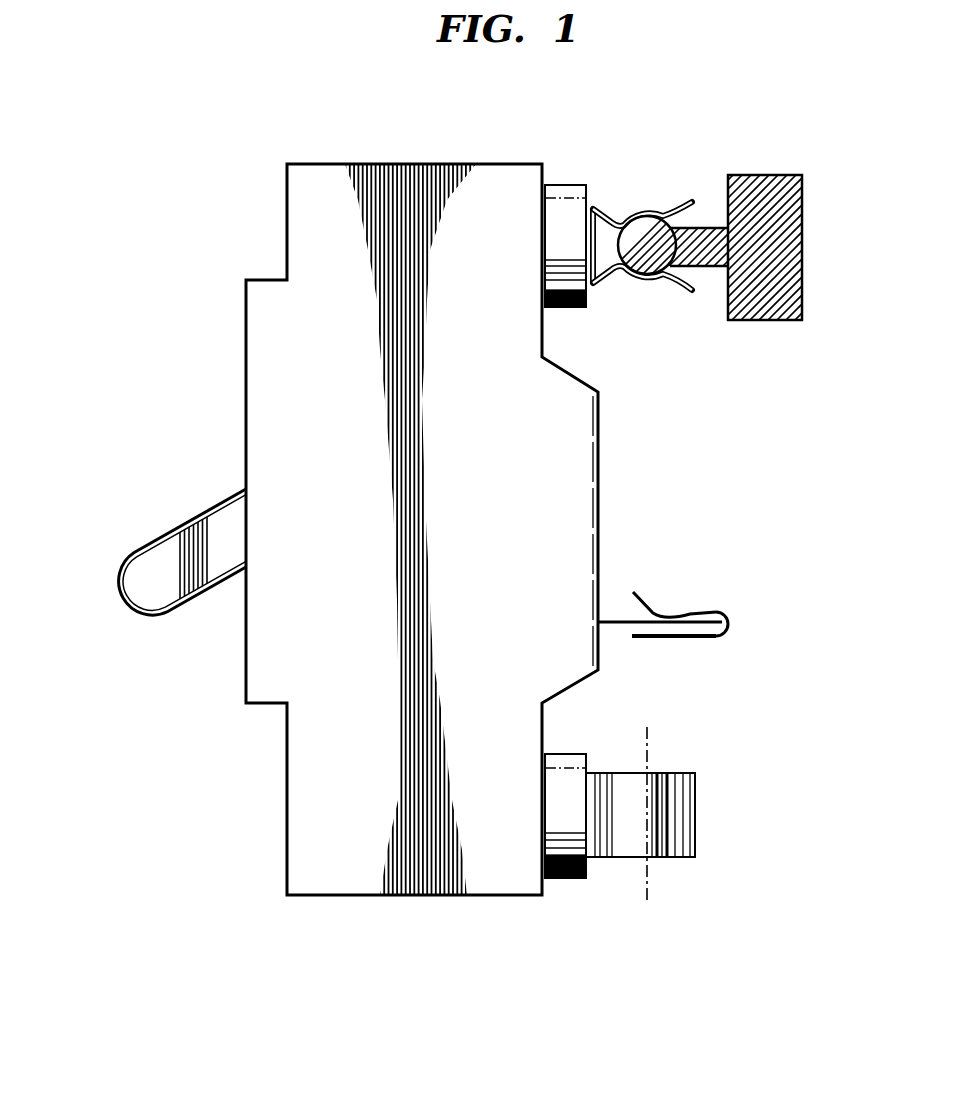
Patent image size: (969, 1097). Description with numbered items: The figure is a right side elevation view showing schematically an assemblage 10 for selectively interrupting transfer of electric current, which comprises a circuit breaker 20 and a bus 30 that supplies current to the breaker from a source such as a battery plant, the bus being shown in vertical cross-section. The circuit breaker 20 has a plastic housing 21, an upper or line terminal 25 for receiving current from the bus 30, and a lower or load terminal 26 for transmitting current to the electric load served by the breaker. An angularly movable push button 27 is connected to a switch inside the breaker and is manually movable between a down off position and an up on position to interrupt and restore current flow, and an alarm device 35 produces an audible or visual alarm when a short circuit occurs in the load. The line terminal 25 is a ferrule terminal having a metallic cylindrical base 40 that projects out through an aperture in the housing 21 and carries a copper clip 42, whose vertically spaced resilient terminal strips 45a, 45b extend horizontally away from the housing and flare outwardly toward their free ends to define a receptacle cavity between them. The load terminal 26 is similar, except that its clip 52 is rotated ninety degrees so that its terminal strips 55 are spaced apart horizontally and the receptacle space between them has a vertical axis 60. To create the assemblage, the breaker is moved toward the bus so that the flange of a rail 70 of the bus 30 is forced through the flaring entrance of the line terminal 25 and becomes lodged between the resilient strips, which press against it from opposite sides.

The assemblage 10 is at (521, 84).
The circuit breaker 20 is at (202, 400).
The plastic housing 21 is at (600, 463).
The upper or line terminal 25 is at (644, 257).
The lower or load terminal 26 is at (579, 915).
The push button 27 is at (112, 596).
The bus 30 is at (757, 260).
The alarm device 35 is at (616, 620).
The cylindrical base 40 is at (571, 184).
The copper clip 42 is at (662, 317).
The terminal strip 45a is at (617, 216).
The terminal strip 45b is at (598, 296).
The clip 52 is at (590, 825).
The terminal strips 55 is at (690, 772).
The vertical axis 60 is at (653, 742).
The rail 70 is at (776, 355).